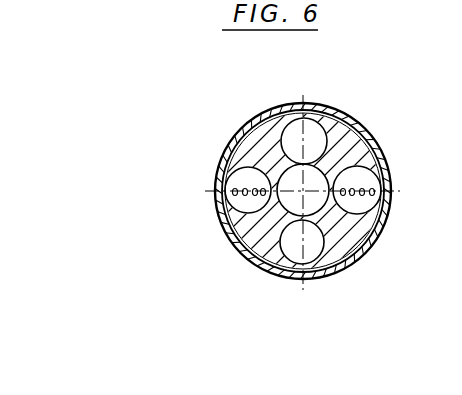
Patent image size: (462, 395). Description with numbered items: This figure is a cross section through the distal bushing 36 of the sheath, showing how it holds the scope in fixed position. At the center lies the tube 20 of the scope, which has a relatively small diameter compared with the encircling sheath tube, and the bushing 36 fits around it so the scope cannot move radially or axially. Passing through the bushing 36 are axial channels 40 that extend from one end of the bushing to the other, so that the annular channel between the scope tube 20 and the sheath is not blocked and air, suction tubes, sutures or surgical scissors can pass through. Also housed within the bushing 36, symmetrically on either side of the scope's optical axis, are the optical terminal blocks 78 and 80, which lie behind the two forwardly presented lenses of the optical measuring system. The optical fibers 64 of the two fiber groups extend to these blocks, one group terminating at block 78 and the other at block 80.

The tube 20 is at (229, 146).
The bushing 36 is at (346, 137).
The axial channels 40 is at (312, 128).
The optical fibers 64 is at (243, 187).
The optical terminal block 78 is at (246, 204).
The optical terminal block 80 is at (370, 212).